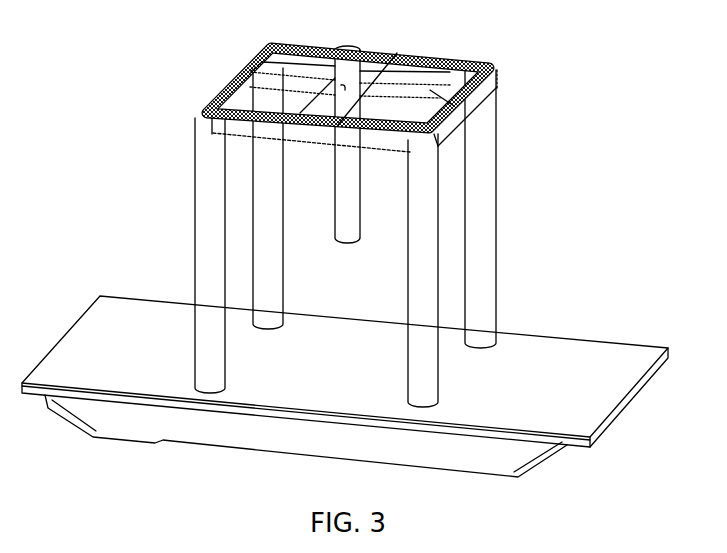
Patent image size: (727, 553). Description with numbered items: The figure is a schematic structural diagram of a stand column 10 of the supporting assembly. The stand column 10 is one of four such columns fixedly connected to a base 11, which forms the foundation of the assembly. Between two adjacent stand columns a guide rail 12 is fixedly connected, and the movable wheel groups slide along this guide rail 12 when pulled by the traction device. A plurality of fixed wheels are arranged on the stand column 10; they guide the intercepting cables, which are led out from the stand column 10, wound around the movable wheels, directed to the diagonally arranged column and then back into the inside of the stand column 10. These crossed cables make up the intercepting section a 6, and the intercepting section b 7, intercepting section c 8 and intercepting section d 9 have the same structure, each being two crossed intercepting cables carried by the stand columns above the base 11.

The intercepting section a 6 is at (302, 106).
The intercepting section b 7 is at (392, 62).
The intercepting section c 8 is at (448, 97).
The intercepting section d 9 is at (440, 130).
The stand column 10 is at (483, 255).
The base 11 is at (570, 368).
The guide rail 12 is at (414, 56).